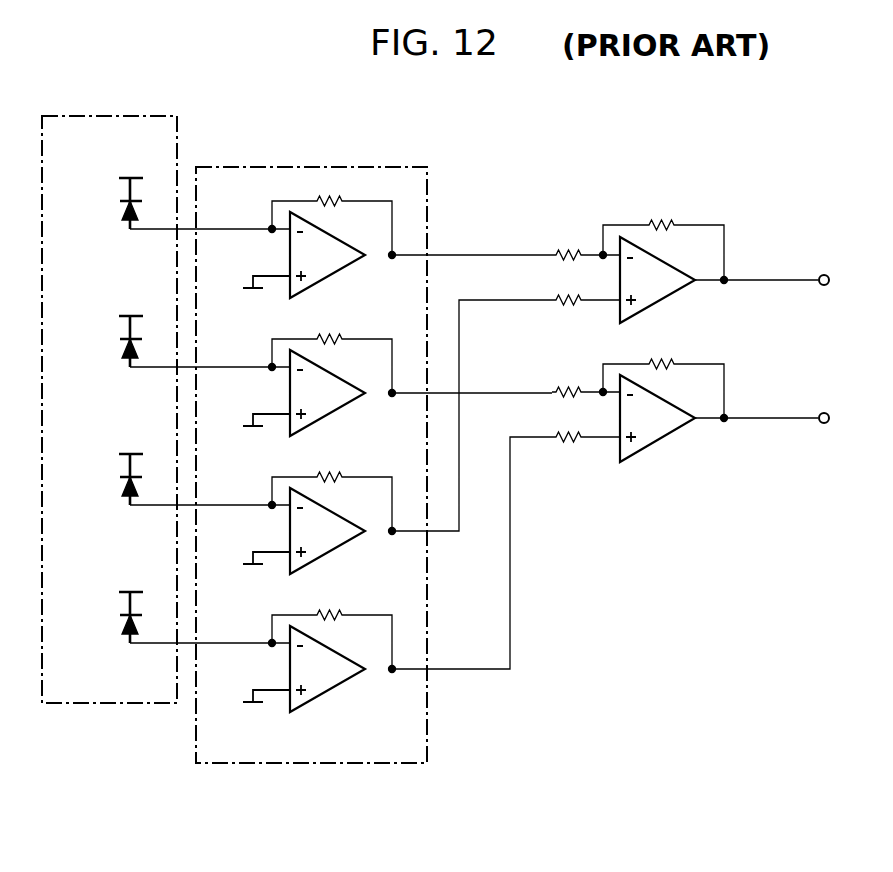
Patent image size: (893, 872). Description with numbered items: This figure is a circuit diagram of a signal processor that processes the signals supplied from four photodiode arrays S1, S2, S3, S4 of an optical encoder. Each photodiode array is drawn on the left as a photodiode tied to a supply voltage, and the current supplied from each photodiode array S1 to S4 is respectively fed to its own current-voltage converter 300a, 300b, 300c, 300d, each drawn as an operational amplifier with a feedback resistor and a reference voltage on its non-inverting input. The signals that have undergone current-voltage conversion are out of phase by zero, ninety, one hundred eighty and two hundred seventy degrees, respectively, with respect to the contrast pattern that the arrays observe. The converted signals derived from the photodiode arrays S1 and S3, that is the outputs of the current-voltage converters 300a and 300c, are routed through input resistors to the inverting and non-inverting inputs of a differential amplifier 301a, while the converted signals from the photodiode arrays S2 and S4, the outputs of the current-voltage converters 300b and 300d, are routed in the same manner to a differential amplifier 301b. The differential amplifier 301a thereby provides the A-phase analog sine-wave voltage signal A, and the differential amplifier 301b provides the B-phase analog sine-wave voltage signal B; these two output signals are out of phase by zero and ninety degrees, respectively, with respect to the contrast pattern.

The photodiode array S1 is at (70, 179).
The photodiode array S2 is at (70, 317).
The photodiode array S3 is at (70, 455).
The photodiode array S4 is at (70, 593).
The current-voltage converter 300a is at (350, 274).
The current-voltage converter 300b is at (350, 412).
The current-voltage converter 300c is at (350, 550).
The current-voltage converter 300d is at (350, 688).
The differential amplifier 301a is at (680, 299).
The differential amplifier 301b is at (680, 439).